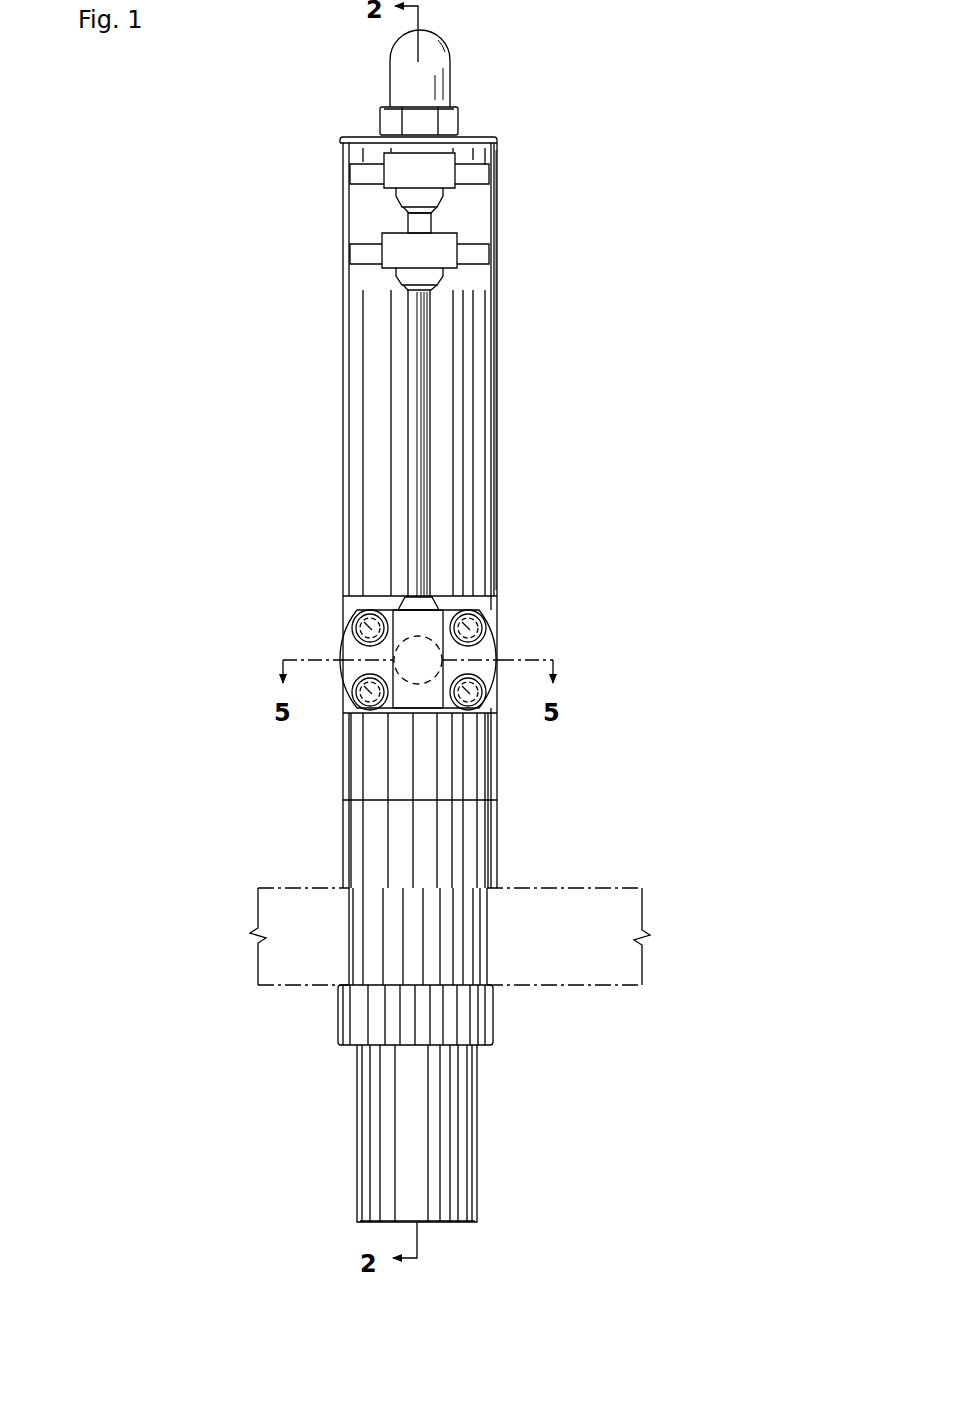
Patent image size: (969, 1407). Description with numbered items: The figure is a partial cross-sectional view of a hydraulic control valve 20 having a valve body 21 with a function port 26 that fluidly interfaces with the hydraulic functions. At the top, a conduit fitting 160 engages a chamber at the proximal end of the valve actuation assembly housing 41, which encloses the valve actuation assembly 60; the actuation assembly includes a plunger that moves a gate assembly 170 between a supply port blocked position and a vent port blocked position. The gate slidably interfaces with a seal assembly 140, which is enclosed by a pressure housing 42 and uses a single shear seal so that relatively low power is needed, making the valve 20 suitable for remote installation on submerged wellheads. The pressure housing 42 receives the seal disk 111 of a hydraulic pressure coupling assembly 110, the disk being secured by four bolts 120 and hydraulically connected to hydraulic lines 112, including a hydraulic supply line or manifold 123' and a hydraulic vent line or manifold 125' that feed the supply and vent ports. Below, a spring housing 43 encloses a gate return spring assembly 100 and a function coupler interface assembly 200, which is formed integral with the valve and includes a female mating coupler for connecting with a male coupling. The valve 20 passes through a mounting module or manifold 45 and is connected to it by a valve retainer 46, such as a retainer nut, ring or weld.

The hydraulic control valve 20 is at (222, 416).
The valve body 21 is at (497, 498).
The function port 26 is at (438, 1226).
The valve actuation assembly housing 41 is at (342, 312).
The pressure housing 42 is at (499, 604).
The spring housing 43 is at (480, 1162).
The mounting module or manifold 45 is at (548, 887).
The valve retainer 46 is at (495, 1020).
The valve actuation assembly 60 is at (330, 213).
The gate return spring assembly 100 is at (338, 862).
The hydraulic pressure coupling assembly 110 is at (338, 652).
The seal disk 111 is at (487, 653).
The hydraulic lines 112 is at (425, 455).
The bolts 120 is at (350, 622).
The hydraulic supply line or manifold 123' is at (495, 223).
The hydraulic vent line or manifold 125' is at (494, 444).
The seal assembly 140 is at (337, 636).
The conduit fitting 160 is at (463, 120).
The gate assembly 170 is at (338, 600).
The function coupler interface assembly 200 is at (325, 1122).